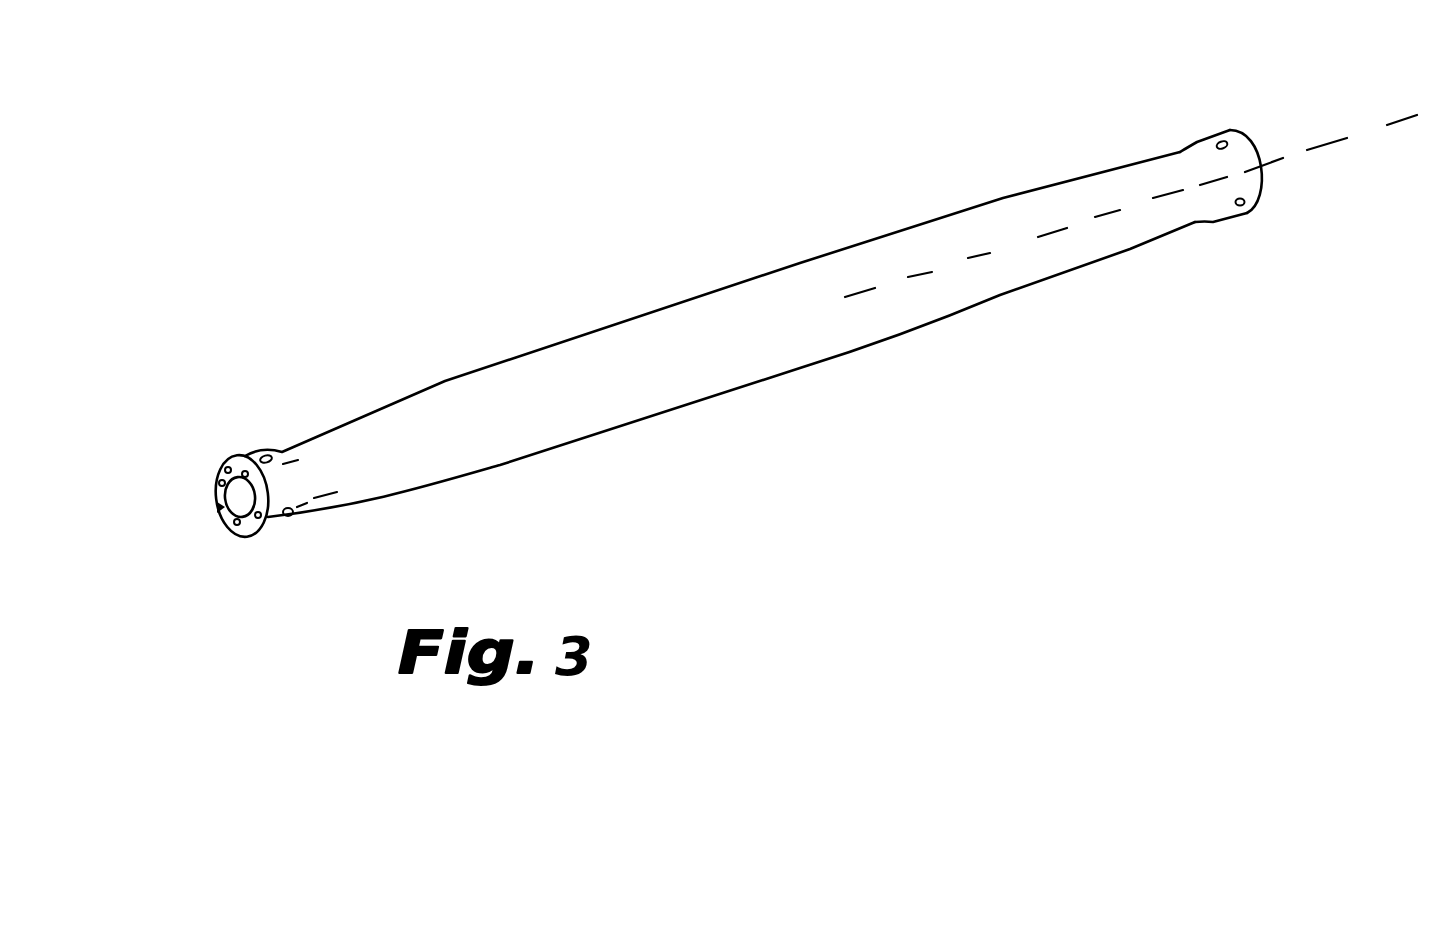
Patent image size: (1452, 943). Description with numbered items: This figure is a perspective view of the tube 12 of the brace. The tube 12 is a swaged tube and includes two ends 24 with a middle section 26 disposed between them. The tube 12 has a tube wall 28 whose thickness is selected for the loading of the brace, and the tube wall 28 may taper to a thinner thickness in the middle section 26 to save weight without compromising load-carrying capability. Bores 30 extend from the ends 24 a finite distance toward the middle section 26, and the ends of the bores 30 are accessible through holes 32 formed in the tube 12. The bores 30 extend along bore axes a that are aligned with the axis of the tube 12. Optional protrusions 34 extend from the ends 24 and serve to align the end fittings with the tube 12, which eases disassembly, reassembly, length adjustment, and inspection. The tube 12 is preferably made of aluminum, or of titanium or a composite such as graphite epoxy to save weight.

The tube 12 is at (660, 256).
The ends 24 is at (227, 424).
The middle section 26 is at (716, 264).
The tube wall 28 is at (247, 540).
The bores 30 is at (246, 469).
The holes 32 is at (268, 457).
The protrusions 34 is at (230, 468).
The bore axes a is at (1393, 120).